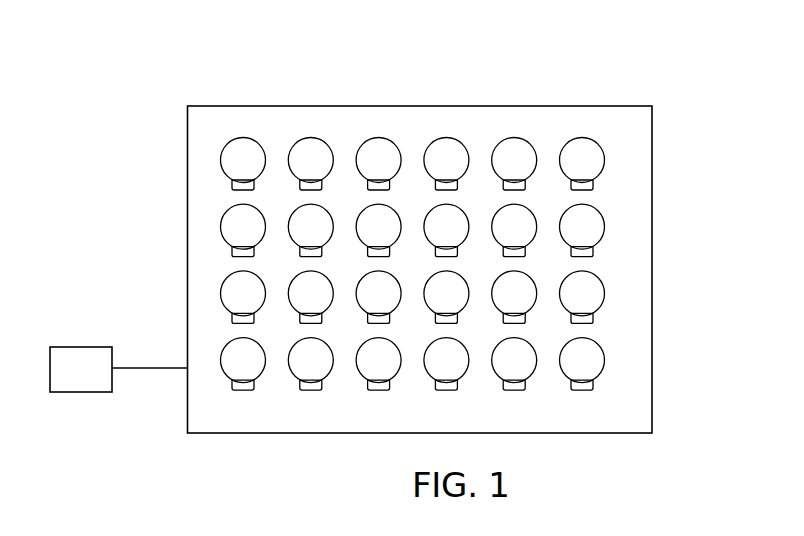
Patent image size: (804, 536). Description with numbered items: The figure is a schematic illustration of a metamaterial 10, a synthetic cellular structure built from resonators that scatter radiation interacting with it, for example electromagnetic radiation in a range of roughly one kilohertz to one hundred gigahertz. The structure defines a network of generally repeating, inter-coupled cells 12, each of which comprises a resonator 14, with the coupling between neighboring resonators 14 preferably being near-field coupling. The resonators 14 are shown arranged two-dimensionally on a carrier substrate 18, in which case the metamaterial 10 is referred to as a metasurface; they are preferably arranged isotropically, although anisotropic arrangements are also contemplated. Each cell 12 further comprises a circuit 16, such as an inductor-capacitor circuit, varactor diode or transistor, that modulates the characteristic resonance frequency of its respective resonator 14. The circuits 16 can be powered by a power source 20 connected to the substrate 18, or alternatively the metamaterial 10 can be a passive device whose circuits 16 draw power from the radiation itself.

The metamaterial 10 is at (135, 147).
The cell 12 is at (434, 208).
The resonator 14 is at (382, 157).
The circuit 16 is at (233, 315).
The carrier substrate 18 is at (218, 410).
The power source 20 is at (119, 369).